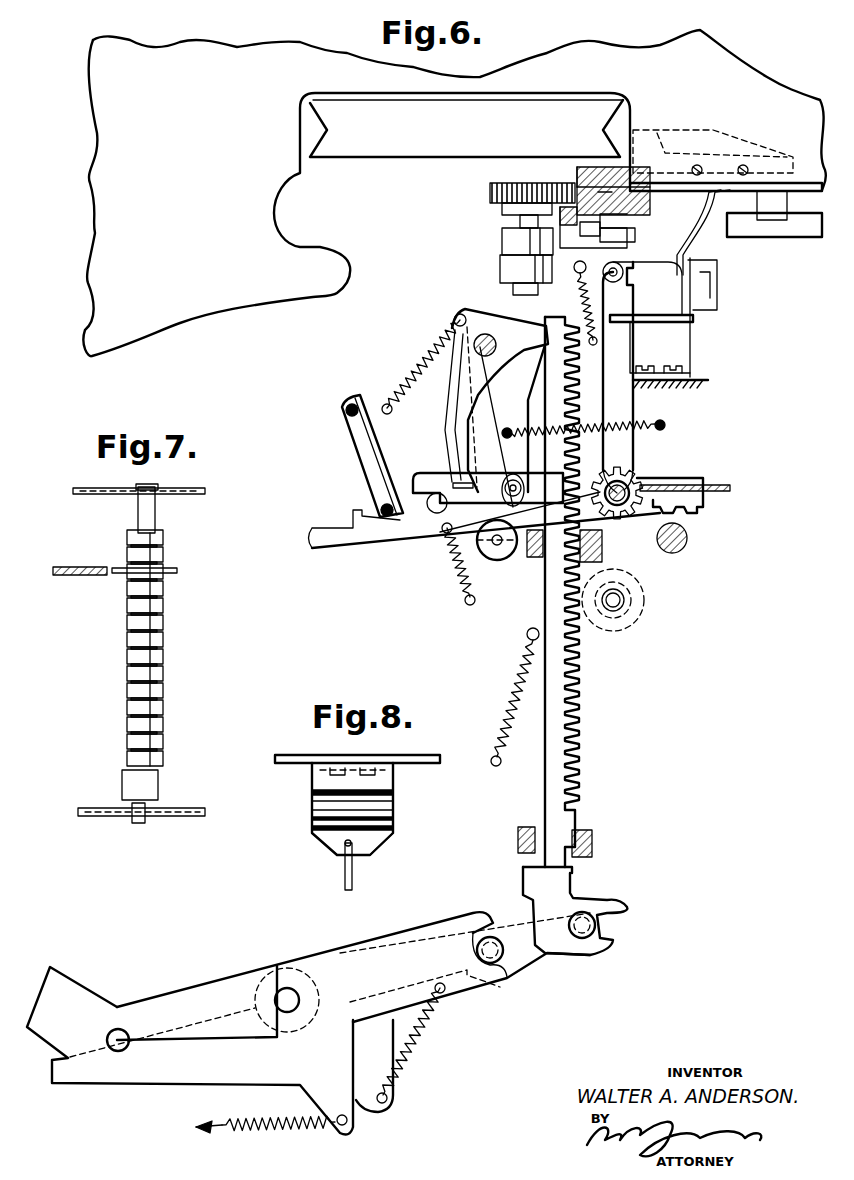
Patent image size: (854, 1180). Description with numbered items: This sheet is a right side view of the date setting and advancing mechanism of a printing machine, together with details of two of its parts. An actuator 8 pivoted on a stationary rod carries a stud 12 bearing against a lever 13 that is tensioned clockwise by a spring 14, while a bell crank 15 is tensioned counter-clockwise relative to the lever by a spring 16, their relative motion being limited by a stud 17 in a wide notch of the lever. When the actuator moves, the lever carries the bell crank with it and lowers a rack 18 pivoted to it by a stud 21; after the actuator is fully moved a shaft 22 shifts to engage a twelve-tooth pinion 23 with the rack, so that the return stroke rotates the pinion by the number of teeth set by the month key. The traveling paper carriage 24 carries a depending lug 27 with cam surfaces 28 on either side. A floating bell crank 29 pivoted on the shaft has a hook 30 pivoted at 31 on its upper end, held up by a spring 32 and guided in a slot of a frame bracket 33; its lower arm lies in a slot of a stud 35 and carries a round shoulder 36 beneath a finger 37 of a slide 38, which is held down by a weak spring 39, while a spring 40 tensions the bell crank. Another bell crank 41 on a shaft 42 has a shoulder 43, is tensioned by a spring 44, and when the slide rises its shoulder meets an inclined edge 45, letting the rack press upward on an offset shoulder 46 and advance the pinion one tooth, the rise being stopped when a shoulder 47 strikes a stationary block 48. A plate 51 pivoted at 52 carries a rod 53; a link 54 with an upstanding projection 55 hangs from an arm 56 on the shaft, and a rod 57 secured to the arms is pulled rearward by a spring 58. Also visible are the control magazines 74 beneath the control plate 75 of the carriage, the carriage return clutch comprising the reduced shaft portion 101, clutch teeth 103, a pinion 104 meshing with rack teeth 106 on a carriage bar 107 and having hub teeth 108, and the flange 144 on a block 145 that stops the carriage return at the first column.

In FIG. 6, the actuator 8 is at (192, 1000).
In FIG. 6, the stud 12 is at (110, 1030).
In FIG. 6, the lever 13 is at (217, 1080).
In FIG. 6, the spring 14 is at (258, 1128).
In FIG. 6, the bell crank 15 is at (527, 957).
In FIG. 6, the spring 16 is at (408, 1062).
In FIG. 6, the stud 17 is at (494, 938).
In FIG. 6, the rack 18 is at (575, 708).
In FIG. 7, the rack 18 is at (80, 575).
In FIG. 6, the stud 21 is at (598, 925).
In FIG. 6, the shaft 22 is at (637, 470).
In FIG. 7, the shaft 22 is at (155, 500).
In FIG. 6, the pinion 23 is at (620, 522).
In FIG. 7, the pinion 23 is at (172, 568).
In FIG. 6, the traveling paper carriage 24 is at (745, 95).
In FIG. 6, the depending lug 27 is at (690, 242).
In FIG. 8, the depending lug 27 is at (370, 812).
In FIG. 8, the cam surfaces 28 is at (325, 845).
In FIG. 6, the floating bell crank 29 is at (620, 398).
In FIG. 6, the hook 30 is at (717, 290).
In FIG. 6, the pivot 31 is at (624, 268).
In FIG. 6, the spring 32 is at (586, 300).
In FIG. 6, the bracket 33 is at (693, 357).
In FIG. 6, the stud 35 is at (497, 560).
In FIG. 6, the round shoulder 36 is at (437, 512).
In FIG. 6, the finger 37 is at (418, 477).
In FIG. 6, the slide 38 is at (545, 603).
In FIG. 6, the weak spring 39 is at (502, 700).
In FIG. 6, the spring 40 is at (466, 598).
In FIG. 6, the bell crank 41 is at (455, 408).
In FIG. 6, the shaft 42 is at (488, 336).
In FIG. 6, the laterally extending shoulder 43 is at (455, 478).
In FIG. 6, the spring 44 is at (445, 338).
In FIG. 6, the inclined edge 45 is at (446, 532).
In FIG. 6, the offset shoulder 46 is at (547, 330).
In FIG. 6, the shoulder 47 is at (523, 878).
In FIG. 6, the stationary block 48 is at (518, 840).
In FIG. 6, the plate 51 is at (384, 405).
In FIG. 6, the pivot 52 is at (355, 405).
In FIG. 6, the rod 53 is at (384, 505).
In FIG. 6, the link 54 is at (325, 548).
In FIG. 6, the upstanding projection 55 is at (358, 507).
In FIG. 6, the arm 56 is at (512, 395).
In FIG. 6, the rod 57 is at (507, 433).
In FIG. 6, the spring 58 is at (660, 428).
In FIG. 6, the control magazines 74 is at (800, 228).
In FIG. 6, the control plate 75 is at (797, 175).
In FIG. 6, the reduced portion 101 is at (520, 222).
In FIG. 6, the teeth 103 is at (505, 240).
In FIG. 6, the pinion 104 is at (490, 190).
In FIG. 6, the rack teeth 106 is at (650, 200).
In FIG. 6, the bar 107 is at (598, 192).
In FIG. 6, the teeth 108 is at (502, 209).
In FIG. 6, the flange 144 is at (580, 180).
In FIG. 6, the block 145 is at (622, 232).